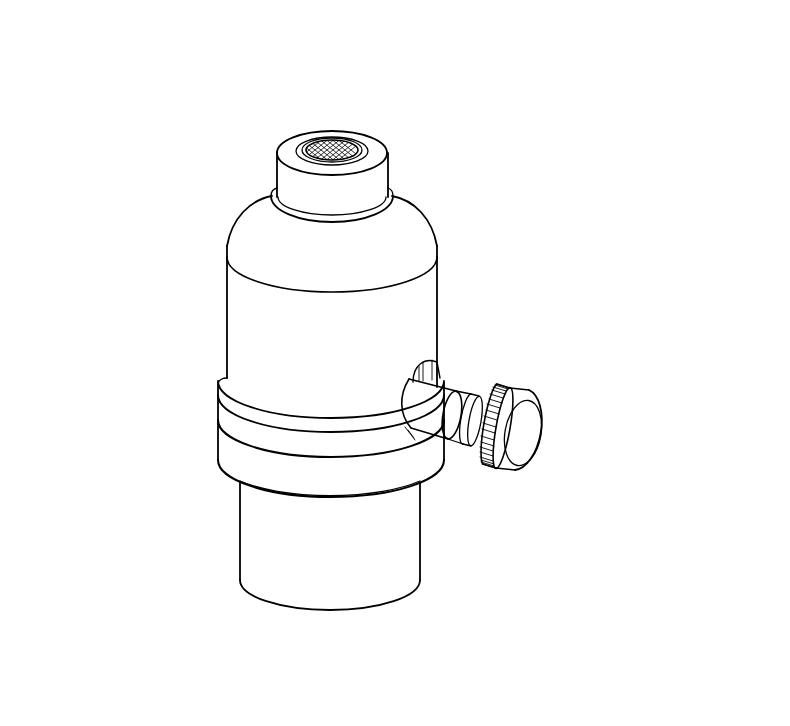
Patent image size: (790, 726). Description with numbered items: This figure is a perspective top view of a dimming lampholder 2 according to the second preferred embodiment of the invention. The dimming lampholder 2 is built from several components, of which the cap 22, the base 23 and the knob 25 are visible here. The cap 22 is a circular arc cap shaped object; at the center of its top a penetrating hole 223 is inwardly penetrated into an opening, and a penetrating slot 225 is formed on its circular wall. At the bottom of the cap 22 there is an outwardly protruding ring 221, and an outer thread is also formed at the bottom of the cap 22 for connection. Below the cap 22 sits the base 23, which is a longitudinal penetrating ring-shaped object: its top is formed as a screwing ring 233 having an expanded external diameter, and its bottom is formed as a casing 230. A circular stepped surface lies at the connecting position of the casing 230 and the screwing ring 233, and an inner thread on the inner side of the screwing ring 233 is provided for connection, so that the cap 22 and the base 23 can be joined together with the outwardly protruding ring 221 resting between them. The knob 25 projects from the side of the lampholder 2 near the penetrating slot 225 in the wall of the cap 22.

The dimming lampholder 2 is at (472, 302).
The cap 22 is at (427, 287).
The penetrating hole 223 is at (339, 142).
The penetrating slot 225 is at (428, 372).
The knob 25 is at (520, 386).
The outwardly protruding ring 221 is at (227, 417).
The screwing ring 233 is at (228, 450).
The base 23 is at (225, 503).
The casing 230 is at (252, 533).